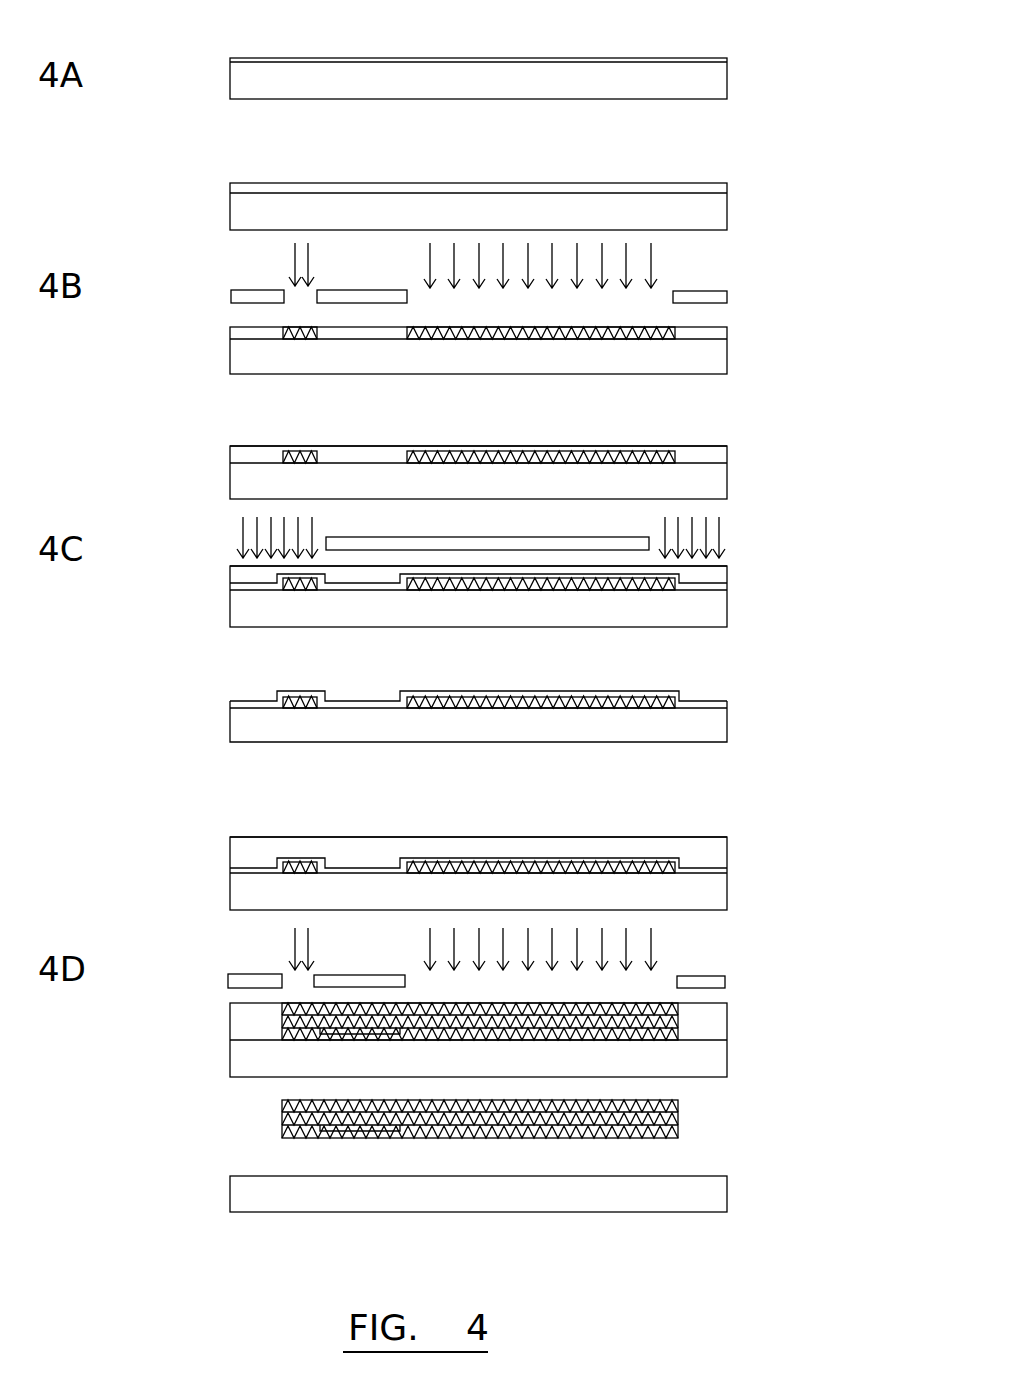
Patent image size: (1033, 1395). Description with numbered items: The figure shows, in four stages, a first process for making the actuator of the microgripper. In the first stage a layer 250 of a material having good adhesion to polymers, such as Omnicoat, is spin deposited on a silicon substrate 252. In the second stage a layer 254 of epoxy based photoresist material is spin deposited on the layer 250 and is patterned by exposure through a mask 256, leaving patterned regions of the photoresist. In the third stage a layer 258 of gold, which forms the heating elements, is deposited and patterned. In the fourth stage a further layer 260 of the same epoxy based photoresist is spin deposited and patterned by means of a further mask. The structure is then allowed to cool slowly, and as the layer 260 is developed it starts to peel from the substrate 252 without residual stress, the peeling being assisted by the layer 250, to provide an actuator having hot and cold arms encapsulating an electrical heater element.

The layer of material having good adhesion to polymers 250 is at (235, 58).
The silicon substrate 252 is at (240, 84).
The layer of epoxy based photoresist material 254 is at (722, 333).
The mask 256 is at (240, 294).
The layer of gold 258 is at (470, 691).
The further layer of SU-8 260 is at (282, 1102).